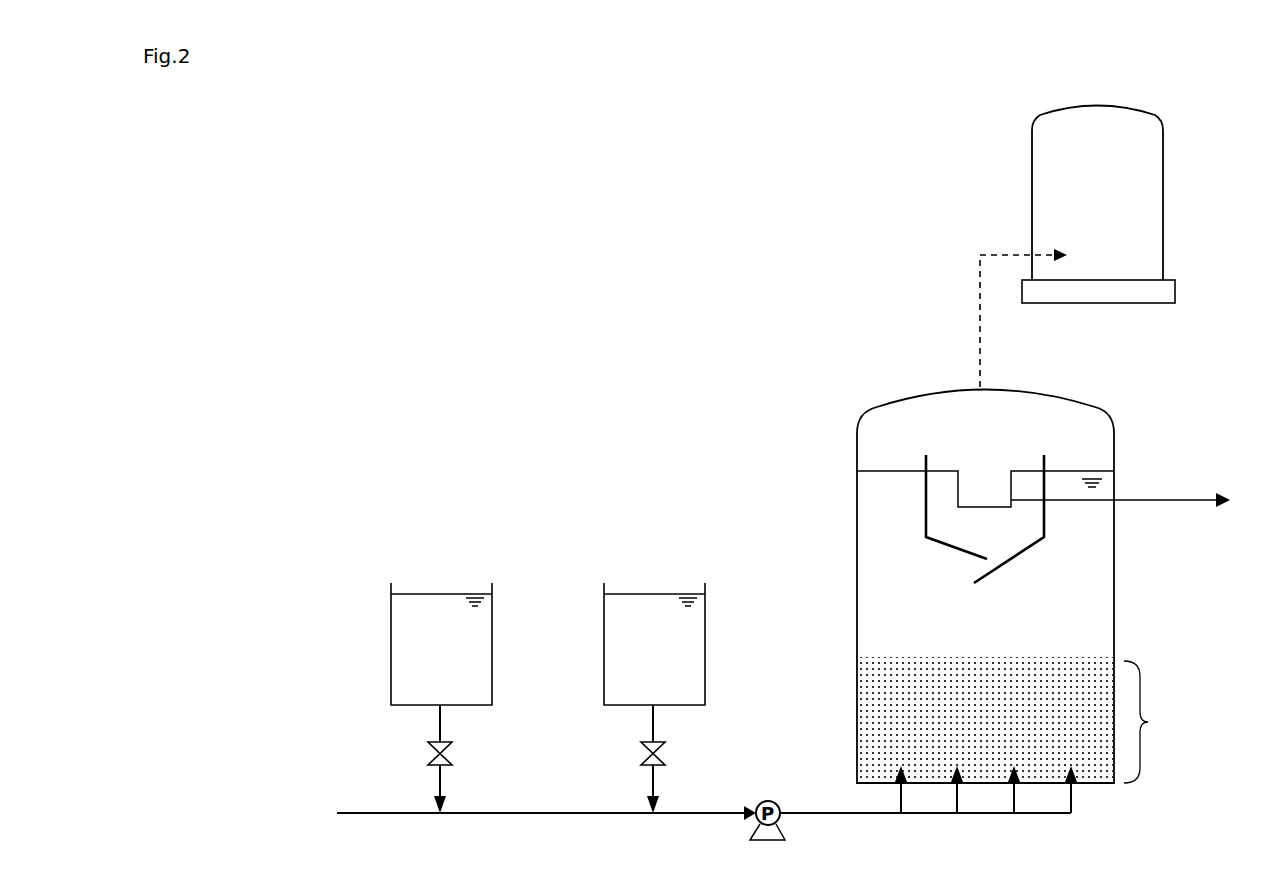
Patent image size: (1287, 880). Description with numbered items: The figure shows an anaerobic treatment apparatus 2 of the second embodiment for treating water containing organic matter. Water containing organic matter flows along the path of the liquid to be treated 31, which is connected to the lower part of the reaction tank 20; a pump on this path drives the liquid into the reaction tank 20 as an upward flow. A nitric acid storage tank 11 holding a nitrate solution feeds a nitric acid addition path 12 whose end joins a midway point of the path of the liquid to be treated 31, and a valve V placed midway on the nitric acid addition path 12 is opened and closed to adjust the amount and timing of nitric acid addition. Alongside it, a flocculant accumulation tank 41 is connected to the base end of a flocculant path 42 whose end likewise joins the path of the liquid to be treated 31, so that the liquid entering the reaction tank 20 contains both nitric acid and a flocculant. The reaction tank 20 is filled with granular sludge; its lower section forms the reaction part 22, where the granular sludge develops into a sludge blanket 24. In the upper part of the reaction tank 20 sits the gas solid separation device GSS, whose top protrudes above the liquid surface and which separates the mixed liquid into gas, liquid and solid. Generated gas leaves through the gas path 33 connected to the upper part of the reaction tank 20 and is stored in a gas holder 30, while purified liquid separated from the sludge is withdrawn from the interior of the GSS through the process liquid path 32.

The anaerobic treatment apparatus 2 is at (681, 241).
The nitric acid storage tank 11 is at (492, 664).
The nitric acid addition path 12 is at (440, 725).
The valve V is at (452, 752).
The flocculant accumulation tank 41 is at (705, 664).
The flocculant path 42 is at (653, 725).
The path of the liquid to be treated 31 is at (540, 820).
The reaction tank 20 is at (885, 392).
The reaction part 22 is at (870, 614).
The sludge blanket 24 is at (1150, 722).
The gas solid separation device GSS is at (1044, 527).
The process liquid path 32 is at (1175, 497).
The gas path 33 is at (980, 345).
The gas holder 30 is at (1032, 183).